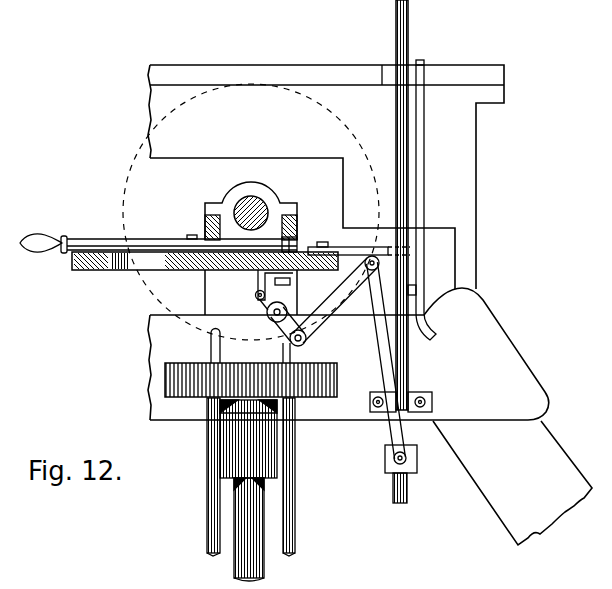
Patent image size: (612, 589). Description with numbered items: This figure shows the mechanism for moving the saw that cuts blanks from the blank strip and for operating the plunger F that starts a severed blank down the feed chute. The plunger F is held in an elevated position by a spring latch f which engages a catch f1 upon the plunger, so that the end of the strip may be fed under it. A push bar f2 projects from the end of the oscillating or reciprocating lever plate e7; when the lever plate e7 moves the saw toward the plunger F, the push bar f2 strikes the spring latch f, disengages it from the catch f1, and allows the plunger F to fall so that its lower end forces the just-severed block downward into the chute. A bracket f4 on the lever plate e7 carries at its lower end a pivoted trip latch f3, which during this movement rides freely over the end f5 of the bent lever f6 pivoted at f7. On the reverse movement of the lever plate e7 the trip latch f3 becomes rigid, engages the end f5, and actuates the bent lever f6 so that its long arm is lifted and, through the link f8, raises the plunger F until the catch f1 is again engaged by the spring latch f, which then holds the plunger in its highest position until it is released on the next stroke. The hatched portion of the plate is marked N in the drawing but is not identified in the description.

The plunger F is at (408, 30).
The spring latch f is at (417, 204).
The catch f1 is at (417, 290).
The push bar f2 is at (355, 252).
The trip latch f3 is at (221, 335).
The bracket f4 is at (258, 278).
The end of bent lever f5 is at (290, 338).
The bent lever f6 is at (328, 313).
The pivot f7 is at (308, 343).
The link f8 is at (384, 367).
The lever plate e7 is at (302, 252).
The plate section N is at (205, 261).